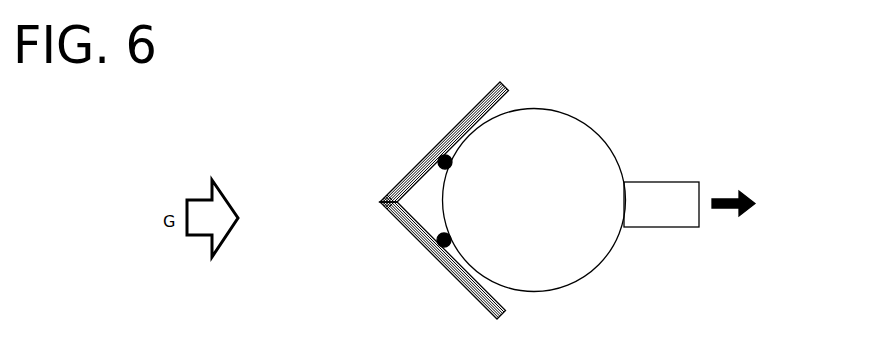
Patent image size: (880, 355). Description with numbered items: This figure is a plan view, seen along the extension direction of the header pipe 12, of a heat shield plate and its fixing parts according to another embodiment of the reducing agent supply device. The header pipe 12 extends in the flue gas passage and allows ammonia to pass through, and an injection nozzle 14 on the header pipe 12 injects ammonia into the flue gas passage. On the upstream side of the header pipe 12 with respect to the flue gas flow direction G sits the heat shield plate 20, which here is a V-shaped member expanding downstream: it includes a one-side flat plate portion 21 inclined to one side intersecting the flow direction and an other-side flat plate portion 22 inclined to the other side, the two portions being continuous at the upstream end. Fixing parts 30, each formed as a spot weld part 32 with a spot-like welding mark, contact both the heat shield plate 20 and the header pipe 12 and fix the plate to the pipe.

The header pipe 12 is at (600, 135).
The injection nozzle 14 is at (657, 227).
The heat shield plate 20 is at (406, 204).
The one-side flat plate portion 21 is at (407, 174).
The other-side flat plate portion 22 is at (408, 231).
The fixing part 30 is at (446, 204).
The spot weld part 32 is at (446, 204).